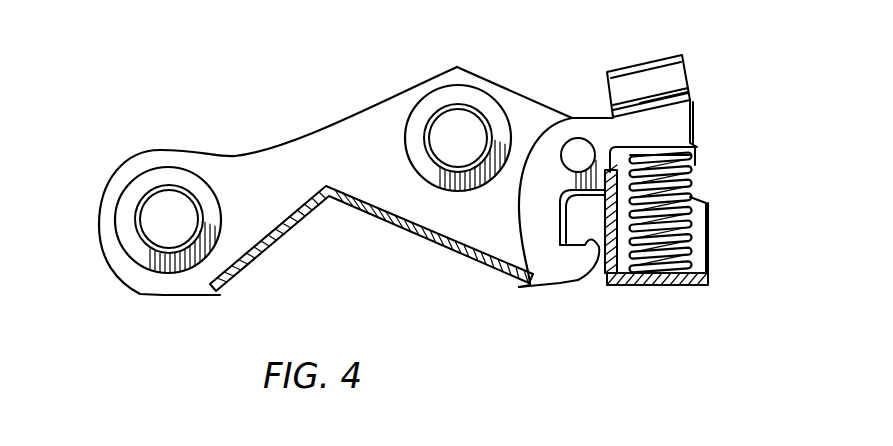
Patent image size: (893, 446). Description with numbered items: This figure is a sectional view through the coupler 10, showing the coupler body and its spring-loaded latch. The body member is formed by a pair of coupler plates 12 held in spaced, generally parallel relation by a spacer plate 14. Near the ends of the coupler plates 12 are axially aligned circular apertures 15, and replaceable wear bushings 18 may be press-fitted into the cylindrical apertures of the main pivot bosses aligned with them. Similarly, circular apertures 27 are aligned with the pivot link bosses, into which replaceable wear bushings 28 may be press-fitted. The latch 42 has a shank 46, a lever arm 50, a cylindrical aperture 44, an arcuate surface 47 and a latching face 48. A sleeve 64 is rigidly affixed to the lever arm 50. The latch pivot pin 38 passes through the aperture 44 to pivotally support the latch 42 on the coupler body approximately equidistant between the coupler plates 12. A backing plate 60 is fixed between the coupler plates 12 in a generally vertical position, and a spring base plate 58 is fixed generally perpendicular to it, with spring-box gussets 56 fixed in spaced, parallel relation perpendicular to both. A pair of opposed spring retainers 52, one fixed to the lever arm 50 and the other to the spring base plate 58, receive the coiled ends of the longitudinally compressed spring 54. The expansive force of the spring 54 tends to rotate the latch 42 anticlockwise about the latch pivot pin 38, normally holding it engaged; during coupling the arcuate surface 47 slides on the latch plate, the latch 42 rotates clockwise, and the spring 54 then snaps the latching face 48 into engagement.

The coupler 10 is at (327, 113).
The coupler plates 12 is at (235, 155).
The spacer plate 14 is at (270, 252).
The circular apertures 15 is at (157, 203).
The replaceable wear bushings 18 is at (153, 252).
The circular apertures 27 is at (445, 123).
The replaceable wear bushings 28 is at (468, 110).
The latch pivot pin 38 is at (588, 190).
The latch 42 is at (546, 115).
The cylindrical aperture 44 is at (575, 137).
The shank 46 is at (537, 218).
The arcuate surface 47 is at (596, 251).
The latching face 48 is at (589, 244).
The lever arm 50 is at (670, 128).
The spring retainers 52 is at (688, 167).
The spring 54 is at (688, 180).
The spring-box gussets 56 is at (700, 210).
The spring base plate 58 is at (667, 288).
The backing plate 60 is at (600, 282).
The sleeve 64 is at (658, 75).